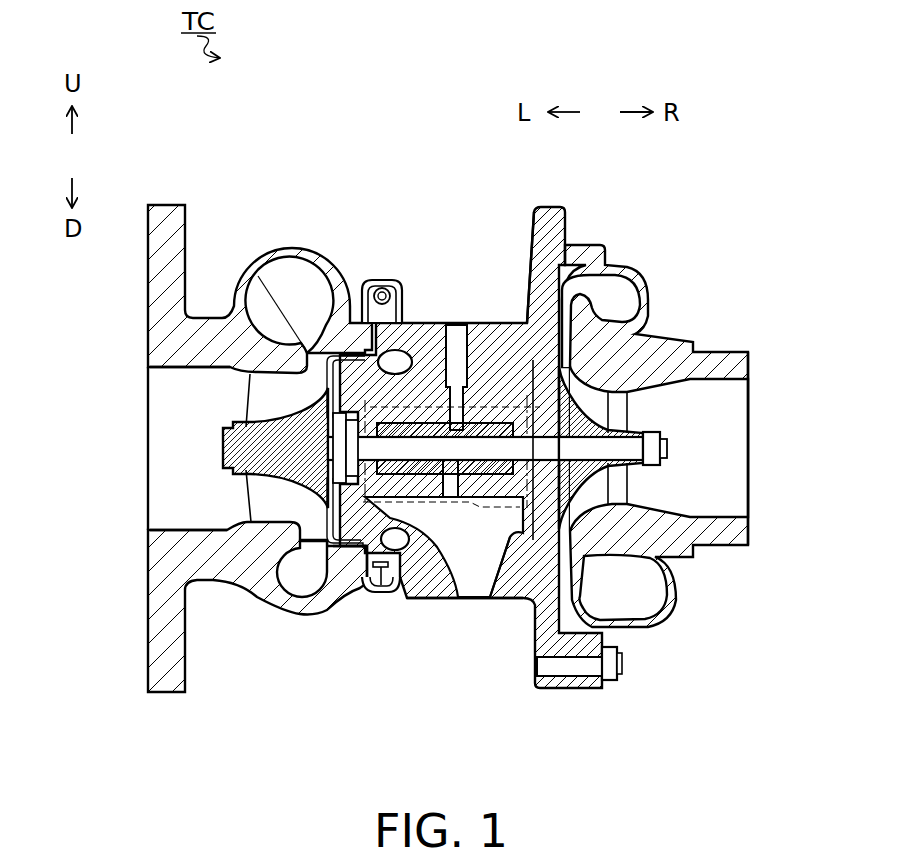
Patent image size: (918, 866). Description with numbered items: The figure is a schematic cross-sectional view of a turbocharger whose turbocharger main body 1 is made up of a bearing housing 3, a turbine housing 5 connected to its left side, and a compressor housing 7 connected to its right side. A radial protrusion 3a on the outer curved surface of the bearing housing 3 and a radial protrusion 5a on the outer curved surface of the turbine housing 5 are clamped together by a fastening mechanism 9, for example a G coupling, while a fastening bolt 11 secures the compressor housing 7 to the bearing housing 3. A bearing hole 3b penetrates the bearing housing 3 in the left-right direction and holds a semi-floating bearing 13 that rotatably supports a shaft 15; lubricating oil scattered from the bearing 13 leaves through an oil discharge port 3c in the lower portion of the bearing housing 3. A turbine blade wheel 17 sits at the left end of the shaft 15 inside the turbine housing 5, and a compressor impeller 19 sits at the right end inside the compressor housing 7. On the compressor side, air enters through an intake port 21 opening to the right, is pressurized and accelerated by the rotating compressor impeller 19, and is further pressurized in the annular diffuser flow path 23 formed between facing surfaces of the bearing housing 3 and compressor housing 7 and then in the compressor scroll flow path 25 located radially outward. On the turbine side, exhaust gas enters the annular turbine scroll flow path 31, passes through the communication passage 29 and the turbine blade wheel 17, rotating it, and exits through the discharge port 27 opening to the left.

The turbocharger main body 1 is at (268, 128).
The bearing housing 3 is at (553, 207).
The protrusion 3a is at (394, 594).
The bearing hole 3b is at (442, 497).
The oil discharge port 3c is at (480, 595).
The turbine housing 5 is at (350, 286).
The protrusion 5a is at (375, 594).
The compressor housing 7 is at (582, 245).
The fastening mechanism 9 is at (404, 310).
The fastening bolt 11 is at (618, 676).
The bearing 13 is at (497, 418).
The shaft 15 is at (440, 440).
The turbine blade wheel 17 is at (232, 519).
The compressor impeller 19 is at (640, 478).
The intake port 21 is at (749, 518).
The diffuser flow path 23 is at (545, 337).
The compressor scroll flow path 25 is at (618, 287).
The discharge port 27 is at (163, 368).
The communication passage 29 is at (257, 276).
The turbine scroll flow path 31 is at (286, 274).